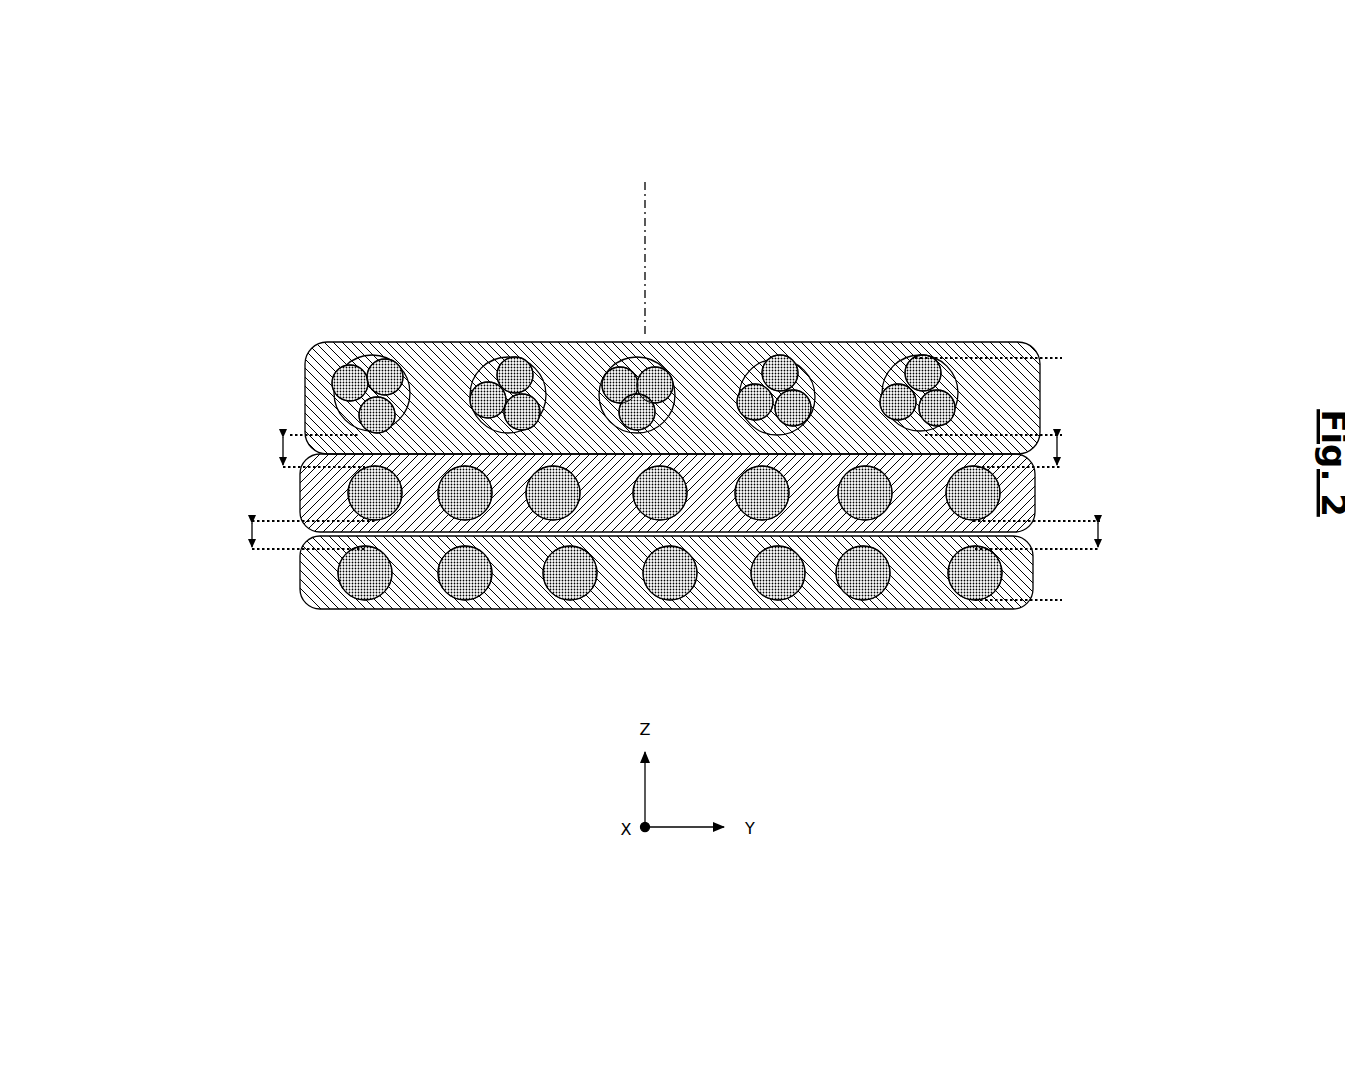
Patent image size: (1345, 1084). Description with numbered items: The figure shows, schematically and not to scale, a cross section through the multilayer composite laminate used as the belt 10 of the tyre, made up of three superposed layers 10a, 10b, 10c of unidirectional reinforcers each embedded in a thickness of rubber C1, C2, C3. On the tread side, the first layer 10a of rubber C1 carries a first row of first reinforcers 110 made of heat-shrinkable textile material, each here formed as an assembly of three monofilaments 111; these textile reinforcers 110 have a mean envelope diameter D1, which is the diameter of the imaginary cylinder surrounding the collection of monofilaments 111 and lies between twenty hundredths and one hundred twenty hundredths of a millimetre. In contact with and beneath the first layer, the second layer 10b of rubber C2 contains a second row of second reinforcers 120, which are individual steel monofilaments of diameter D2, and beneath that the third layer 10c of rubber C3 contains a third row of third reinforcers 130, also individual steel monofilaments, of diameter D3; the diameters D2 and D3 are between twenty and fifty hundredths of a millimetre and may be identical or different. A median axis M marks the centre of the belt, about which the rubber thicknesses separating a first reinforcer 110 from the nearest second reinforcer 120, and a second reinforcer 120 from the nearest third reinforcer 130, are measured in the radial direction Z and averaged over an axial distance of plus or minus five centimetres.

The belt 10 is at (636, 425).
The first layer 10a is at (294, 380).
The second layer 10b is at (294, 492).
The third layer 10c is at (294, 576).
The first reinforcers 110 is at (920, 340).
The monofilaments 111 is at (651, 378).
The second reinforcers 120 is at (553, 497).
The third reinforcers 130 is at (873, 583).
The rubber of first layer C1 is at (443, 392).
The rubber of second layer C2 is at (603, 490).
The rubber of third layer C3 is at (418, 568).
The centre of the belt M is at (650, 183).
The envelope diameter D1 is at (1057, 433).
The diameter of second reinforcers D2 is at (828, 518).
The diameter of third reinforcers D3 is at (1057, 551).